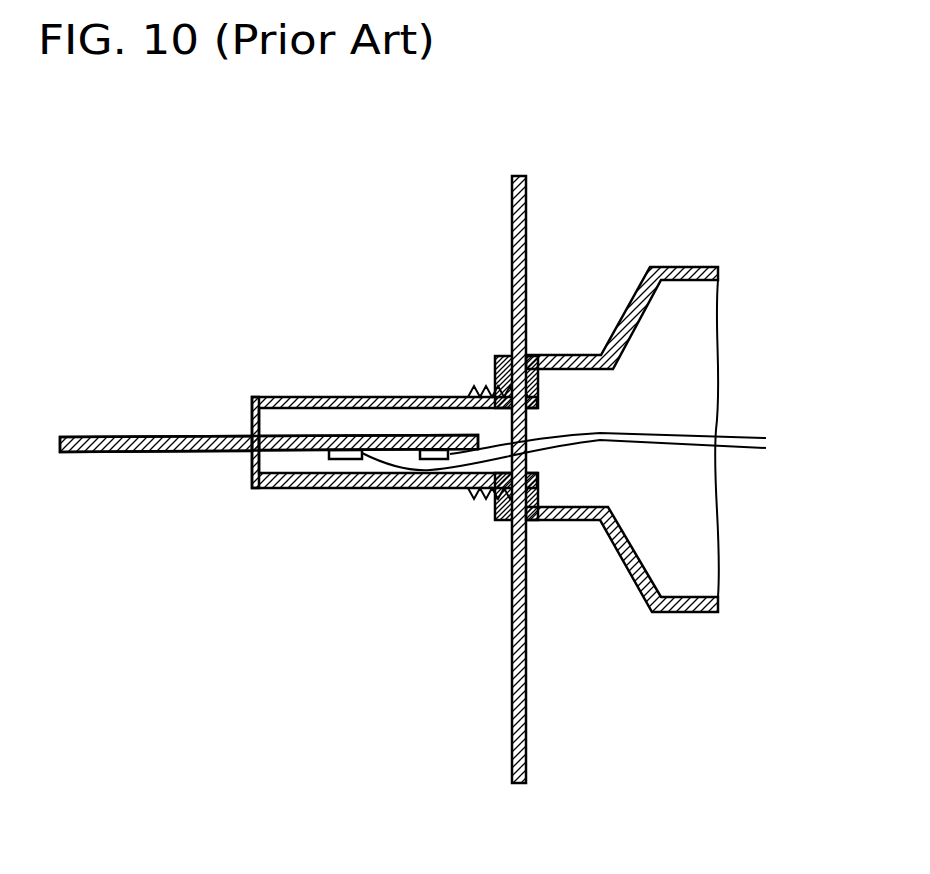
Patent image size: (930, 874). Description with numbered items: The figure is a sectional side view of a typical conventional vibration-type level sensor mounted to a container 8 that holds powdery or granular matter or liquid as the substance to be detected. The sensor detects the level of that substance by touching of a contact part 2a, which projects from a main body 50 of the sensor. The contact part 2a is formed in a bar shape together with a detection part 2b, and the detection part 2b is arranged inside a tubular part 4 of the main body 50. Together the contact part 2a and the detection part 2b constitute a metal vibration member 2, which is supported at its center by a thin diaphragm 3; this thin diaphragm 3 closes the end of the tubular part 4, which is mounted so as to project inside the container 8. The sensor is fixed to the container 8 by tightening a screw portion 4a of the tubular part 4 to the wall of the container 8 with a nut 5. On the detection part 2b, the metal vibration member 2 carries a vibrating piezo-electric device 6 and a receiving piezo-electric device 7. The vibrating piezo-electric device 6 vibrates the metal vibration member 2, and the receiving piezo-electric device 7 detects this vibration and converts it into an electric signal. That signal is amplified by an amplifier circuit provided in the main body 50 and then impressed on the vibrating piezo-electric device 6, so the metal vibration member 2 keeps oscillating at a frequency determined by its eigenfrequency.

The metal vibration member 2 is at (235, 451).
The contact part 2a is at (132, 437).
The detection part 2b is at (398, 435).
The thin diaphragm 3 is at (251, 420).
The tubular part 4 is at (322, 397).
The screw portion 4a is at (495, 514).
The nut 5 is at (495, 372).
The vibrating piezo-electric device 6 is at (345, 459).
The receiving piezo-electric device 7 is at (430, 459).
The container 8 is at (526, 198).
The main body 50 is at (675, 267).